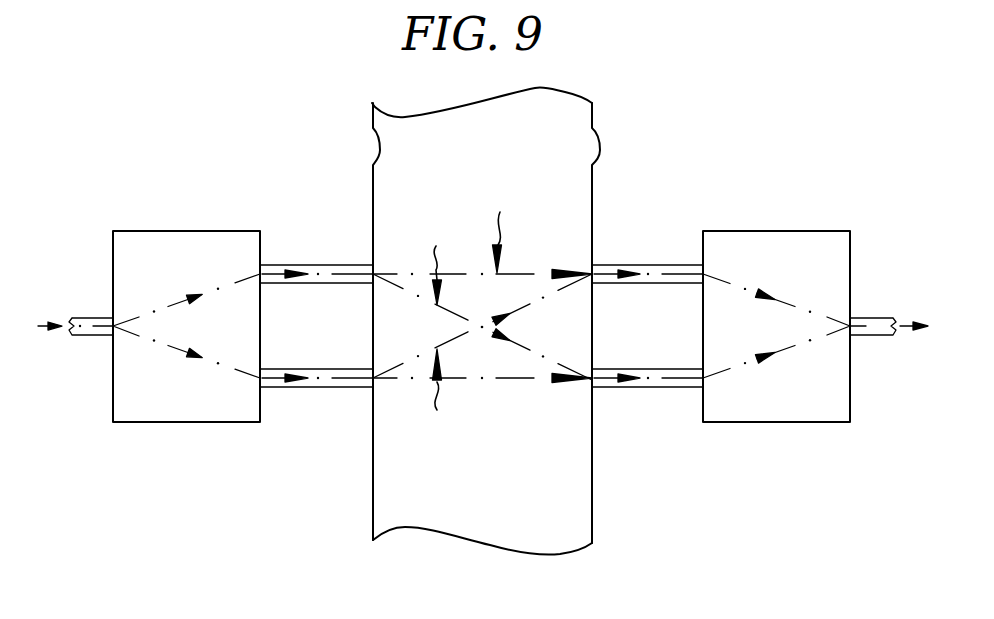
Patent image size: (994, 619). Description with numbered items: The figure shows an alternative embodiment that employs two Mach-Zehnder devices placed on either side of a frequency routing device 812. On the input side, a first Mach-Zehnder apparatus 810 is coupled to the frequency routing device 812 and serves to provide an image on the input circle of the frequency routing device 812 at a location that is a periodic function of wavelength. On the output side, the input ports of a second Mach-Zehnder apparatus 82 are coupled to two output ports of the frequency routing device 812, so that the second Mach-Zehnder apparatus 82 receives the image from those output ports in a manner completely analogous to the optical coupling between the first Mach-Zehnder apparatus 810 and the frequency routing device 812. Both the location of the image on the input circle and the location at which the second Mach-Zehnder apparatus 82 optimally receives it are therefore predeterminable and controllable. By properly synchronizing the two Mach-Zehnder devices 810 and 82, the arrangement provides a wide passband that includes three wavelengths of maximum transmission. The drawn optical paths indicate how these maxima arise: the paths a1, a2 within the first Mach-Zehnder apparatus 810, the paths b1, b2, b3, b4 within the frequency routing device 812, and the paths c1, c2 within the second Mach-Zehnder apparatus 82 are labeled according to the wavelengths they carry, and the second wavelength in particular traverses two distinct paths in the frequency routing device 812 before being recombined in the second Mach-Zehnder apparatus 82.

The first Mach-Zehnder apparatus 810 is at (195, 413).
The frequency routing device 812 is at (578, 171).
The second Mach-Zehnder apparatus 82 is at (772, 413).
The input beam a1 is at (206, 365).
The input beam a2 is at (206, 292).
The beam b1 is at (544, 395).
The beam b2 is at (536, 354).
The beam b3 is at (536, 299).
The beam b4 is at (544, 261).
The output beam c1 is at (757, 365).
The output beam c2 is at (757, 287).